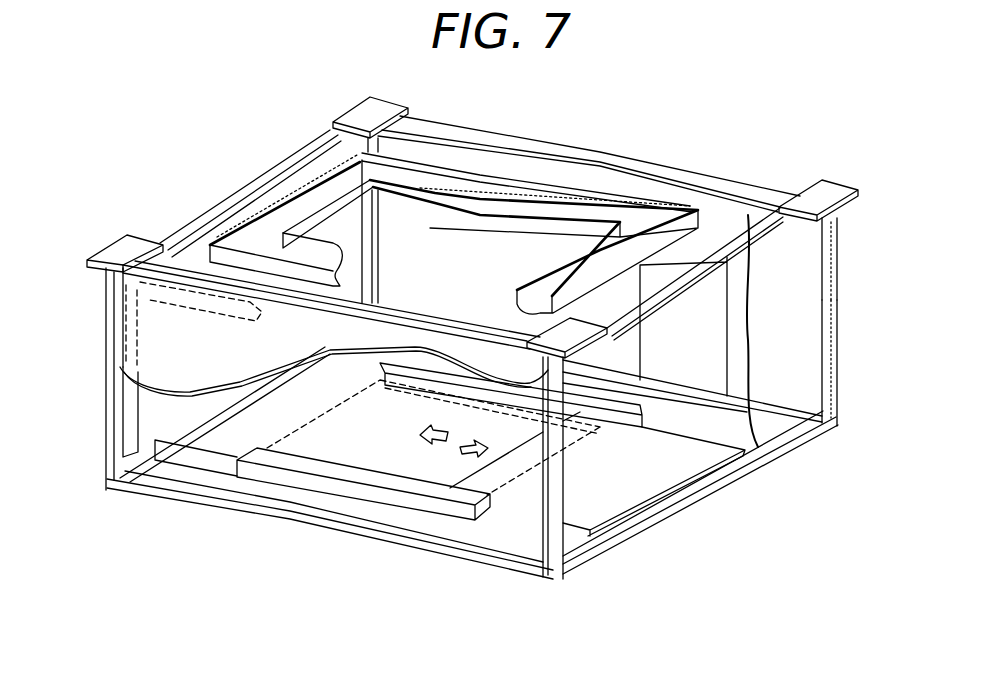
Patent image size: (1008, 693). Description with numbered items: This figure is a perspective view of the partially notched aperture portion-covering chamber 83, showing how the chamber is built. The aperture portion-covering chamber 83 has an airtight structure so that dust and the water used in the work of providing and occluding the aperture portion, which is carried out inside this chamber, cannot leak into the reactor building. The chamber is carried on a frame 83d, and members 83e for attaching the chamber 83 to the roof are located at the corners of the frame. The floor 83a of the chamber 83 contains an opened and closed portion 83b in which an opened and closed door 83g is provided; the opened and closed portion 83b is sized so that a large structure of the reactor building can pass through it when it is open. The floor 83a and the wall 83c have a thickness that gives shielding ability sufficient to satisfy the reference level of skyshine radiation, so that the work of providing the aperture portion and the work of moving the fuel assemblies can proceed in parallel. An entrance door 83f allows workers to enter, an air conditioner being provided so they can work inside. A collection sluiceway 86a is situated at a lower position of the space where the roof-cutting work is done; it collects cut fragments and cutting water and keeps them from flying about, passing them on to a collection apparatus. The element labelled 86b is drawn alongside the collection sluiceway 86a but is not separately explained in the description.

The aperture portion-covering chamber 83 is at (677, 163).
The floor 83a is at (238, 482).
The opened and closed portion 83b is at (434, 503).
The wall 83c is at (817, 345).
The frame 83d is at (840, 238).
The members for attaching the chamber to the roof 83e is at (823, 190).
The entrance door 83f is at (727, 307).
The opened and closed door 83g is at (592, 517).
The collection sluiceway 86a is at (498, 177).
The heater side plate 86b is at (123, 427).